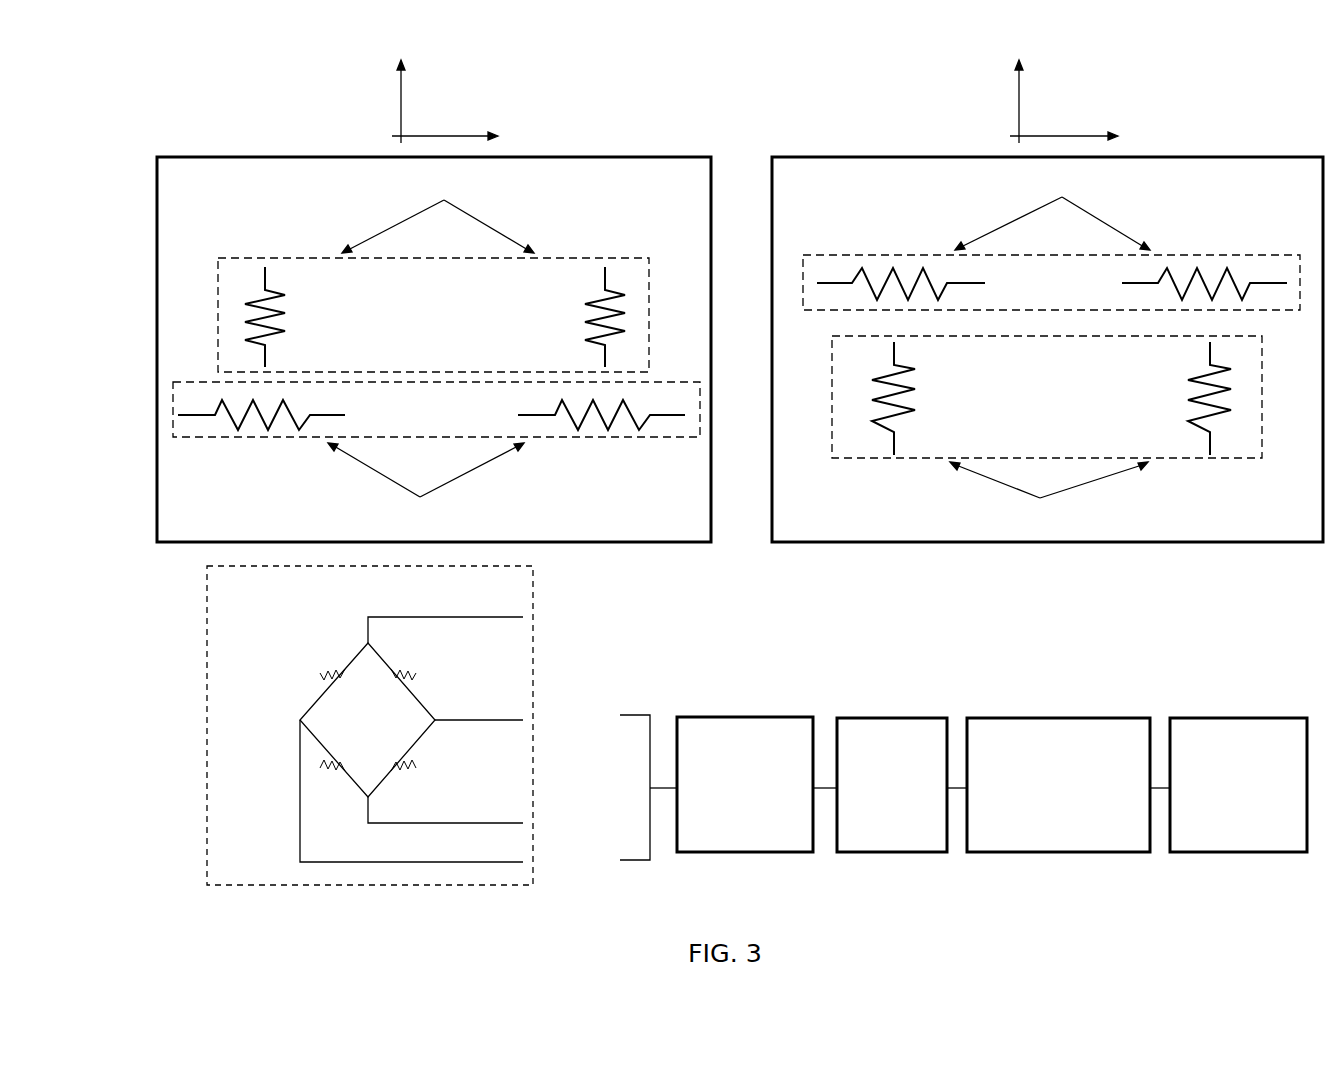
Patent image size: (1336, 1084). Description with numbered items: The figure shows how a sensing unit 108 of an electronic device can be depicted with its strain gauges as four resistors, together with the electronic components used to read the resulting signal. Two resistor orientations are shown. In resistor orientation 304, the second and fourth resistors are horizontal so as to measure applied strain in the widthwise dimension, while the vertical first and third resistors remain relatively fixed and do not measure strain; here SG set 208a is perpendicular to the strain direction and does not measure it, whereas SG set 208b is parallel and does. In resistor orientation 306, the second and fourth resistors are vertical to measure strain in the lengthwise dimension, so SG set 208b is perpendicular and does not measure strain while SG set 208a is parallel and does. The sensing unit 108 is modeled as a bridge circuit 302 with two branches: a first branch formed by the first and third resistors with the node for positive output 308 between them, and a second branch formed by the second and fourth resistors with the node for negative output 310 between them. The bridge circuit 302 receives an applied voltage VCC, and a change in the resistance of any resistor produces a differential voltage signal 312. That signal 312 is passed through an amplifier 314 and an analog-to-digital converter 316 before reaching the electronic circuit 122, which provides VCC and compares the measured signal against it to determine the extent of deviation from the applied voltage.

The sensing unit 108 is at (418, 739).
The electronic circuit 122 is at (1230, 699).
The SG set 208a is at (251, 246).
The SG set 208b is at (866, 246).
The bridge circuit 302 is at (297, 632).
The resistor orientation 304 is at (265, 148).
The resistor orientation 306 is at (926, 146).
The positive output 308 is at (596, 880).
The negative output 310 is at (580, 694).
The differential voltage signal 312 is at (780, 699).
The amplifier 314 is at (944, 699).
The analog-to-digital converter 316 is at (1075, 699).